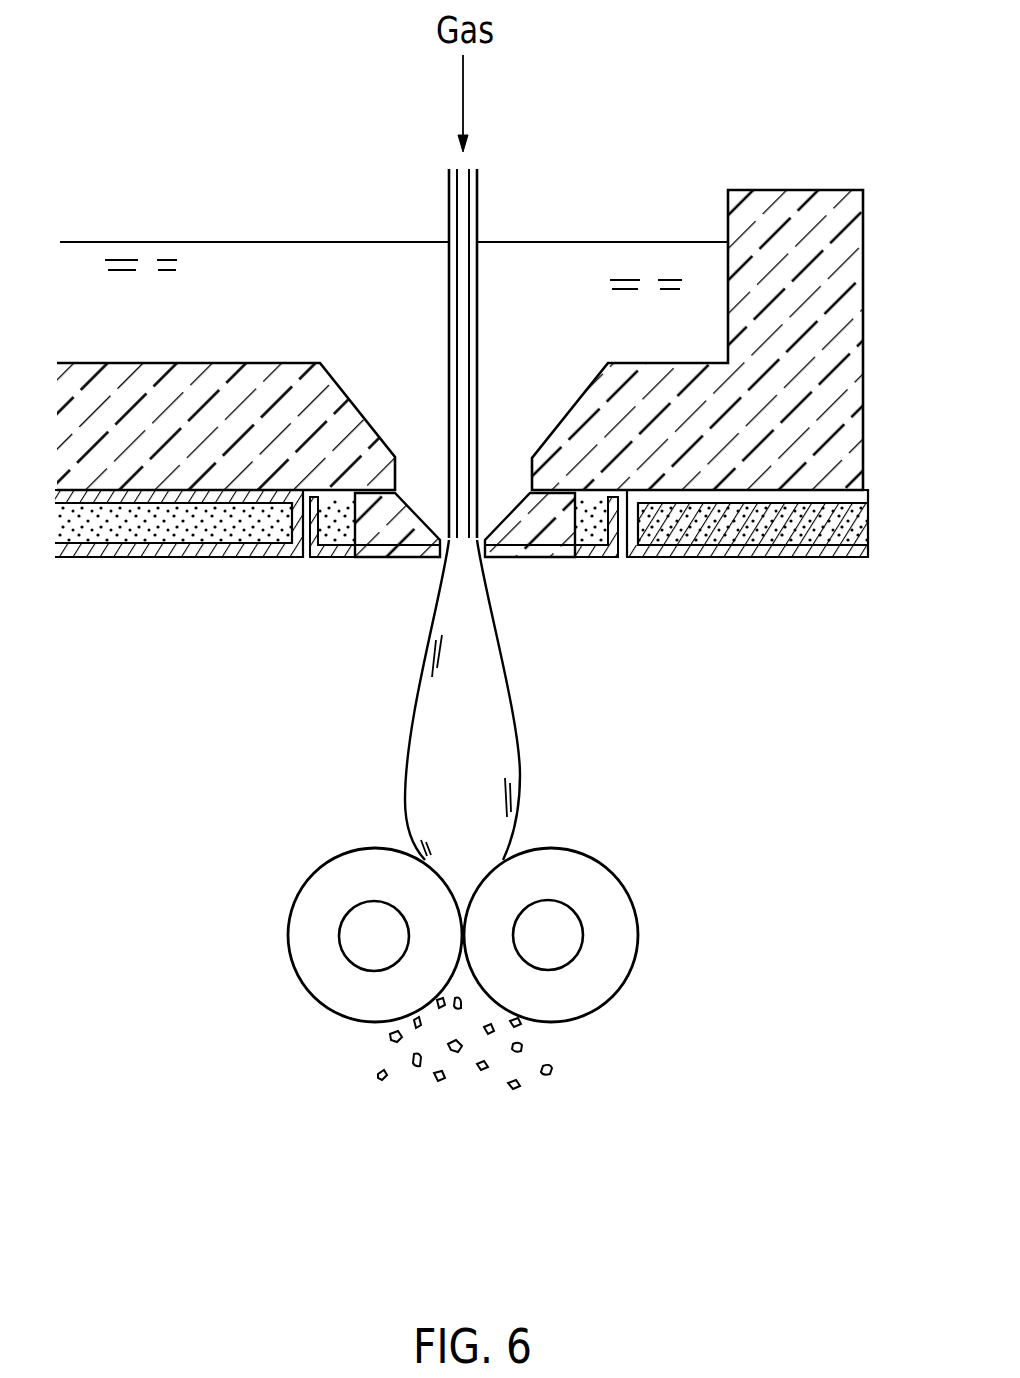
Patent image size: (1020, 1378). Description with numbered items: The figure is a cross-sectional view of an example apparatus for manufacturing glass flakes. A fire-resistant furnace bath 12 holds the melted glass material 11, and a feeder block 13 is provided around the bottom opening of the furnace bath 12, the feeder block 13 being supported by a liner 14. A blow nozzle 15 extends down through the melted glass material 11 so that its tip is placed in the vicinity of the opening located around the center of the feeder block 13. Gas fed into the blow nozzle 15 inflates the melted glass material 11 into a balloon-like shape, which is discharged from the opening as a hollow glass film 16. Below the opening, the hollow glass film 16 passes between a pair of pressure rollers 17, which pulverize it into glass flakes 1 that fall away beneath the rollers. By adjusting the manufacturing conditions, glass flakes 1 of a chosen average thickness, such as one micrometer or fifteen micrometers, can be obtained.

The glass flakes 1 is at (557, 1070).
The melted glass material 11 is at (242, 262).
The fire-resistant furnace bath 12 is at (810, 205).
The feeder block 13 is at (382, 560).
The liner 14 is at (490, 557).
The blow nozzle 15 is at (477, 197).
The hollow glass film 16 is at (503, 760).
The pressure rollers 17 is at (610, 932).